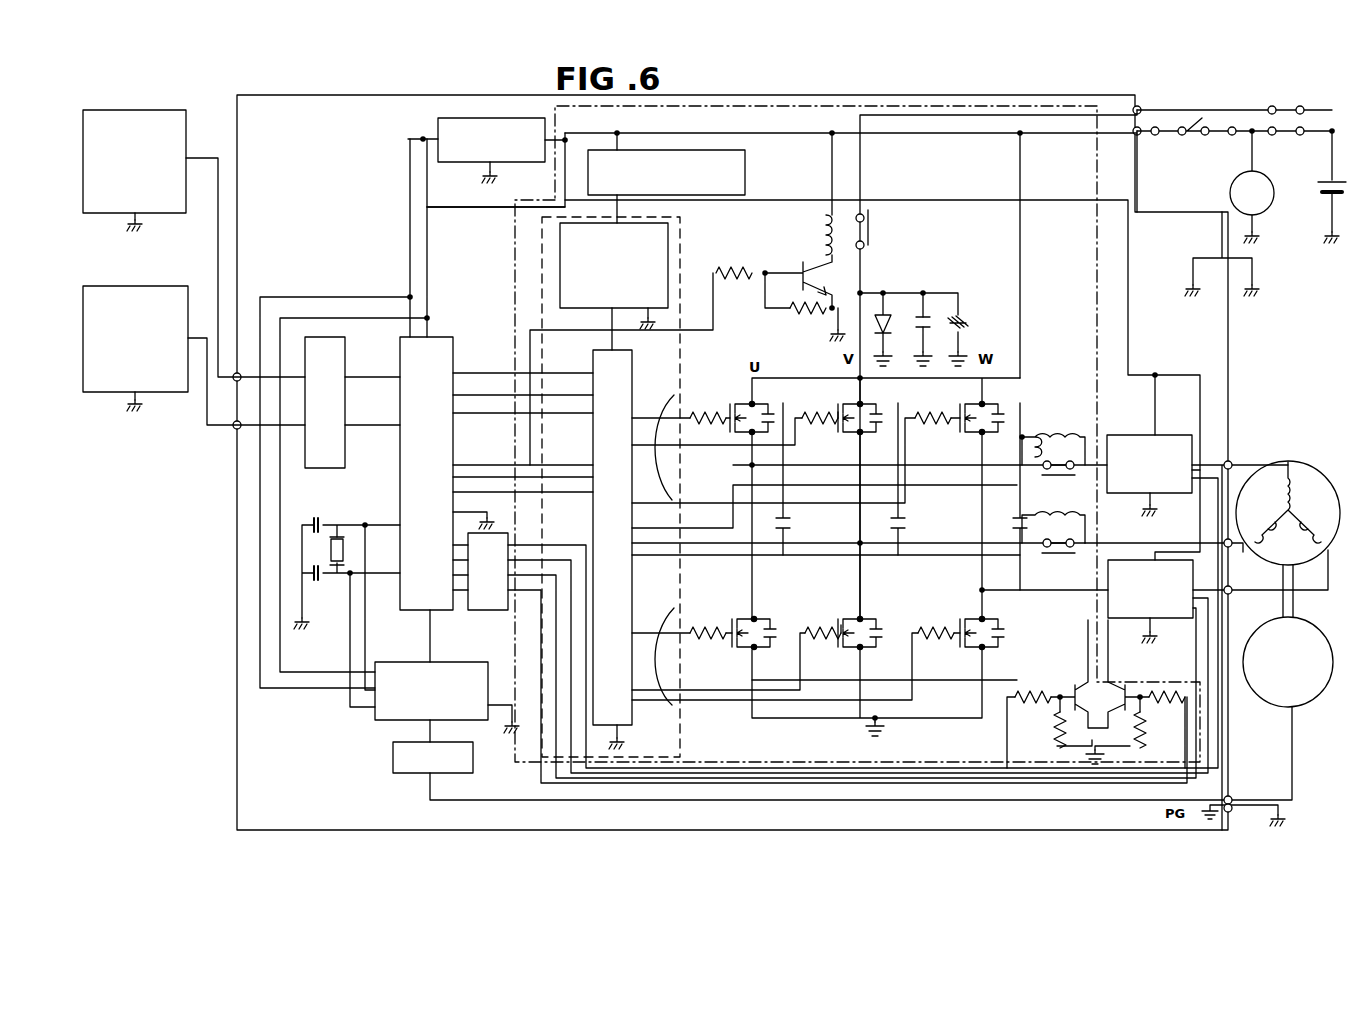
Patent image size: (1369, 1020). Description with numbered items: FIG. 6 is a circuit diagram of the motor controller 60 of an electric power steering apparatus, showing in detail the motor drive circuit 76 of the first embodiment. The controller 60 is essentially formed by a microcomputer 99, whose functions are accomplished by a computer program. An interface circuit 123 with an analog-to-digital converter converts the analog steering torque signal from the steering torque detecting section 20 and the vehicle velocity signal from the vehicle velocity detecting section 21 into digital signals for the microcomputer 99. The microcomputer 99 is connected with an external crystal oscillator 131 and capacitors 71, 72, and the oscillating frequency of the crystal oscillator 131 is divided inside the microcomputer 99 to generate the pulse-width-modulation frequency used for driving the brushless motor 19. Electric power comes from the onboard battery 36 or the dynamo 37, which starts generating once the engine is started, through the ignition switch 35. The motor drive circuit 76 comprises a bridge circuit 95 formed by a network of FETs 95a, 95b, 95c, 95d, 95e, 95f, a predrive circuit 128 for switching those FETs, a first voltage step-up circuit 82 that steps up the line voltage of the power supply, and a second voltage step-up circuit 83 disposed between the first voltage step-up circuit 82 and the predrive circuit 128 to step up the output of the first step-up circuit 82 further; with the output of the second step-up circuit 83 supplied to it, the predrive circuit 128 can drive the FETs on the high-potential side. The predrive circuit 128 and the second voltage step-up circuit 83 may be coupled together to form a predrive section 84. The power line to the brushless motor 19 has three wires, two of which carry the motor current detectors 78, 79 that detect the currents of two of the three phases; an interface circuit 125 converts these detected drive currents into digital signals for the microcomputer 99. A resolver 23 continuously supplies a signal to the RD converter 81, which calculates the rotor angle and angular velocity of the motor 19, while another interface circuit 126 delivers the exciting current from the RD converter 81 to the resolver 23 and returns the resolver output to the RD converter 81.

The motor controller 60 is at (237, 128).
The steering torque detecting section 20 is at (165, 213).
The vehicle velocity detecting section 21 is at (168, 392).
The interface circuit 123 is at (325, 337).
The microcomputer 99 is at (445, 337).
The crystal oscillator 131 is at (343, 545).
The capacitor 71 is at (318, 520).
The capacitor 72 is at (318, 578).
The interface circuit 125 is at (490, 610).
The RD converter 81 is at (375, 720).
The interface circuit 126 is at (393, 760).
The first voltage step-up circuit 82 is at (745, 172).
The second voltage step-up circuit 83 is at (668, 240).
The predrive circuit 128 is at (632, 380).
The motor drive circuit 76 is at (930, 100).
The bridge circuit 95 is at (870, 607).
The FET 95a is at (722, 410).
The FET 95b is at (728, 622).
The FET 95c is at (836, 422).
The FET 95d is at (834, 622).
The FET 95e is at (955, 422).
The FET 95f is at (957, 622).
The motor current detector 78 is at (1138, 435).
The motor current detector 79 is at (1162, 618).
The ignition switch 35 is at (1195, 118).
The dynamo 37 is at (1230, 190).
The onboard battery 36 is at (1318, 192).
The brushless motor 19 is at (1327, 472).
The resolver 23 is at (1327, 640).
The predrive section 84 is at (565, 760).